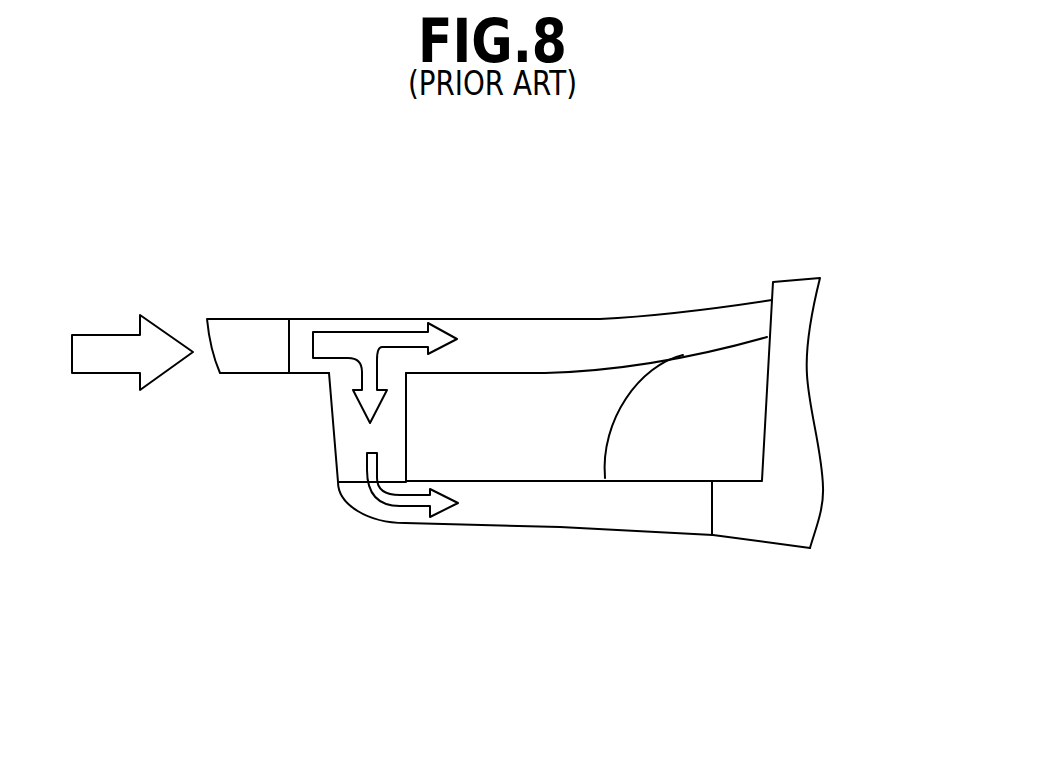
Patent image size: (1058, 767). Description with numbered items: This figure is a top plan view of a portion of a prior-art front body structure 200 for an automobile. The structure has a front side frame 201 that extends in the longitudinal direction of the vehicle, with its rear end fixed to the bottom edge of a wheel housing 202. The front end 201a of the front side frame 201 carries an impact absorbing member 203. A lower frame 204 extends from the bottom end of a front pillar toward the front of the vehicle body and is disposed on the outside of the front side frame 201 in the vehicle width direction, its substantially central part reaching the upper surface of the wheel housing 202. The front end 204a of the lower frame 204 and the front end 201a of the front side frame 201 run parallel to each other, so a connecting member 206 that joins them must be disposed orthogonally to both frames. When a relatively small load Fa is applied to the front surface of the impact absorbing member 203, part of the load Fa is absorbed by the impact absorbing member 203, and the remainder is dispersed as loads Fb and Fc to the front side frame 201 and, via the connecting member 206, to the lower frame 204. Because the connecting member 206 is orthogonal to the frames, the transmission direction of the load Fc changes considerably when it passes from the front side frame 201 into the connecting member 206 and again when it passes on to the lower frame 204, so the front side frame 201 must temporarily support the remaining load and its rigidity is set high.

The front body structure 200 is at (705, 220).
The front side frame 201 is at (588, 328).
The front end of the front side frame 201a is at (303, 335).
The wheel housing 202 is at (735, 403).
The impact absorbing member 203 is at (238, 335).
The lower frame 204 is at (594, 518).
The front end of the lower frame 204a is at (377, 513).
The connecting member 206 is at (345, 427).
The load Fa is at (118, 339).
The load Fb is at (398, 337).
The load Fc is at (372, 382).